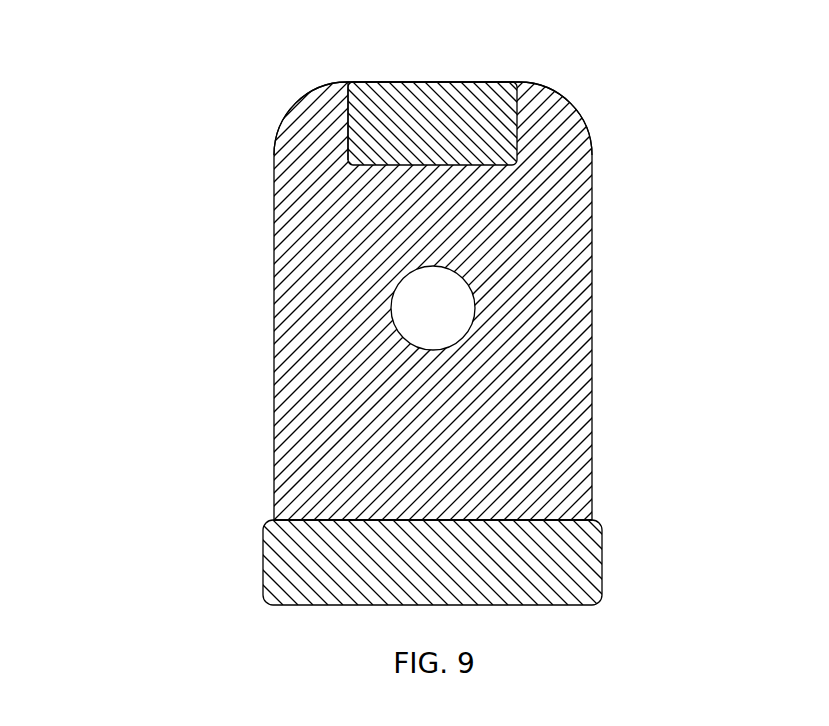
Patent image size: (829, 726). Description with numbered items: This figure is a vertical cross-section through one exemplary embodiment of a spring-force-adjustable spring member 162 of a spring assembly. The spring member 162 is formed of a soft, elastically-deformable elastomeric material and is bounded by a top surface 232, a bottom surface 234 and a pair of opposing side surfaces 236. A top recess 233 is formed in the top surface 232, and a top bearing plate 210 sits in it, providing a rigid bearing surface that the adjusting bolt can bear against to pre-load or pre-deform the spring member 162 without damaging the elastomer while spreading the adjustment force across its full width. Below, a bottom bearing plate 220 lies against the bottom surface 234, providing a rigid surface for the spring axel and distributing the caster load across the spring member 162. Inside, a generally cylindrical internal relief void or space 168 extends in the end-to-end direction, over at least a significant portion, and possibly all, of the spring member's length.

The spring member 162 is at (130, 95).
The internal relief void or space 168 is at (425, 298).
The top bearing plate 210 is at (445, 102).
The bottom bearing plate 220 is at (287, 560).
The top surface 232 is at (330, 87).
The top recess 233 is at (348, 133).
The bottom surface 234 is at (557, 518).
The opposing side surfaces 236 is at (273, 232).